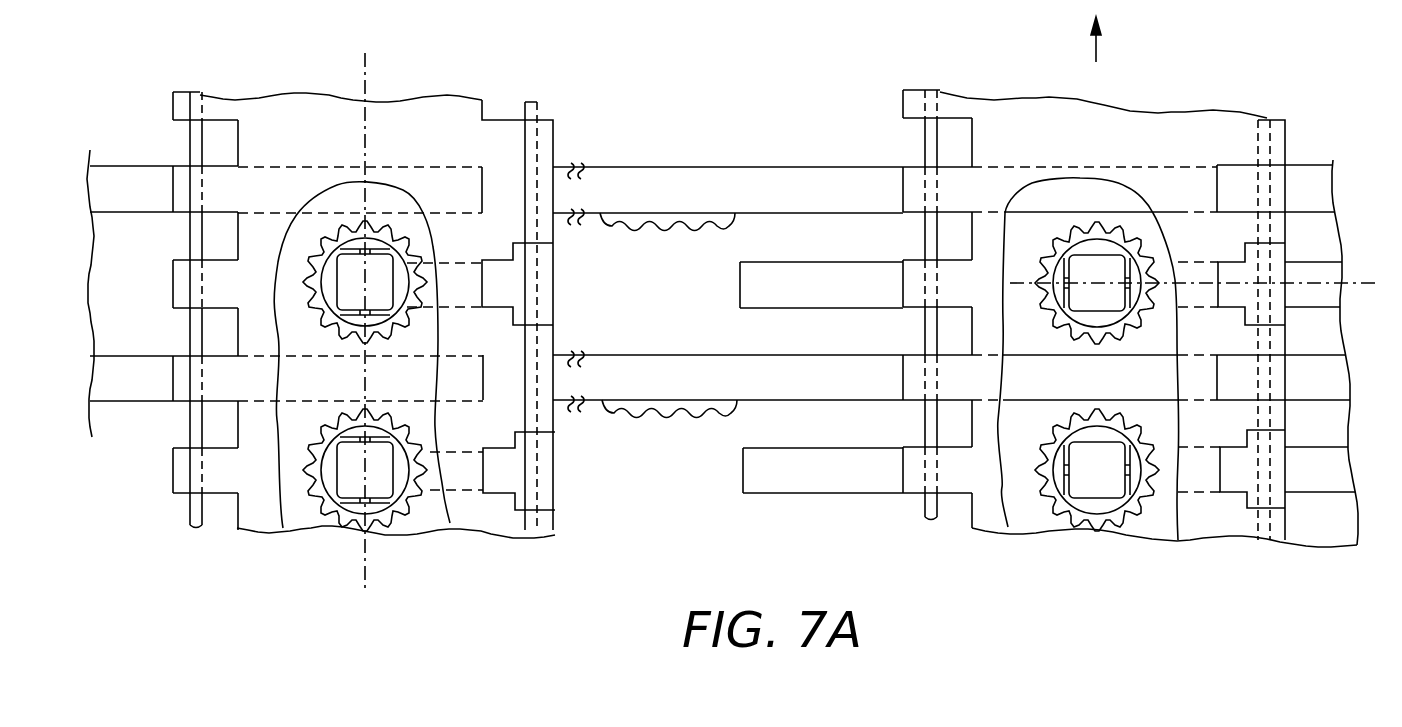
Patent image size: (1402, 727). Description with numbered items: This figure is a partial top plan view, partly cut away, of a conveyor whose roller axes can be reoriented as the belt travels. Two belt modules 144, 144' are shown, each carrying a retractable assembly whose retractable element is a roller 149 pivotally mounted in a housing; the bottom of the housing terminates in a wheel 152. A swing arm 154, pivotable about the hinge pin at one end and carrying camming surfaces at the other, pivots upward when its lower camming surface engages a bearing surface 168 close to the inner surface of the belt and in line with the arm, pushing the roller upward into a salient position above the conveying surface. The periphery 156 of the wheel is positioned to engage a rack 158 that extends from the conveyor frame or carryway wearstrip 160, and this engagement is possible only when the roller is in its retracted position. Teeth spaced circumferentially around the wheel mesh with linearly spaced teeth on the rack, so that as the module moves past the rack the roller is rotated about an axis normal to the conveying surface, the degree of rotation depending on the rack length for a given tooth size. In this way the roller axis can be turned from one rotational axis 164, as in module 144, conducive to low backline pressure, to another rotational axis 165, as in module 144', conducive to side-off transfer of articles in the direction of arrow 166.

The belt module 144 is at (377, 292).
The belt module 144' is at (1148, 313).
The roller 149 is at (345, 485).
The wheel 152 is at (387, 520).
The swing arm 154 is at (470, 477).
The periphery of the wheel 156 is at (300, 452).
The rack 158 is at (664, 420).
The carryway wearstrip 160 is at (695, 170).
The rotational axis 164 is at (370, 59).
The rotational axis 165 is at (1303, 283).
The arrow 166 is at (1100, 48).
The bearing surface 168 is at (742, 278).